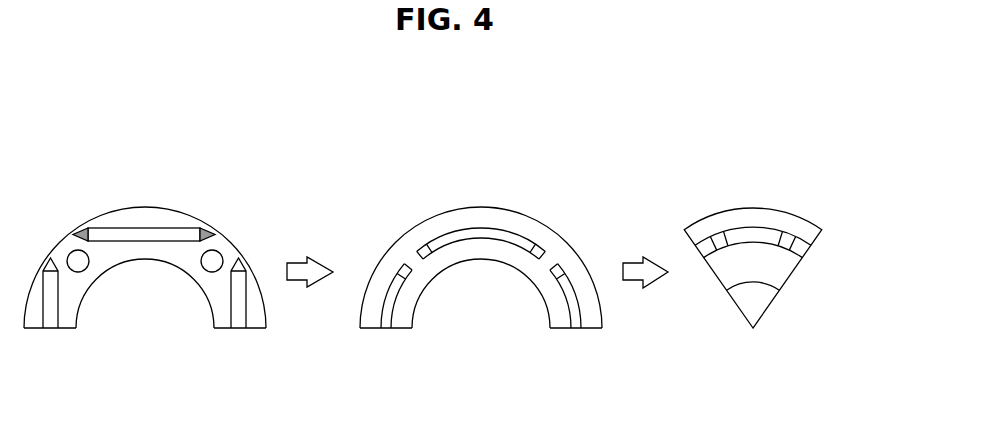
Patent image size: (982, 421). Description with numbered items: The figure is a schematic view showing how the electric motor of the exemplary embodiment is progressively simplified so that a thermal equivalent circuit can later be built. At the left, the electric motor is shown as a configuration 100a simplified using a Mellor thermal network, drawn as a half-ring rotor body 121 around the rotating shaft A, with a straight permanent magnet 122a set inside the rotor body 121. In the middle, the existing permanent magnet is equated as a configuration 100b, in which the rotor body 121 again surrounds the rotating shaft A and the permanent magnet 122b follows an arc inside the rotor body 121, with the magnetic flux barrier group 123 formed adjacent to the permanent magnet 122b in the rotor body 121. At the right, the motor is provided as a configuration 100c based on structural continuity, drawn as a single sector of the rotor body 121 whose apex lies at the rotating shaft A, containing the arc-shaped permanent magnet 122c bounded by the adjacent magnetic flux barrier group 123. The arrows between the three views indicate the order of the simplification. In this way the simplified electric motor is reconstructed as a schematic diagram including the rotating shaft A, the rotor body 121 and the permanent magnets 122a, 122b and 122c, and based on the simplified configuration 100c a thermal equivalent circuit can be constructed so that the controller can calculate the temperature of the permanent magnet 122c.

The configuration 100a is at (145, 215).
The configuration 100b is at (481, 215).
The configuration 100c is at (753, 215).
The rotor body 121 is at (449, 215).
The permanent magnet 122a is at (150, 230).
The permanent magnet 122b is at (492, 233).
The permanent magnet 122c is at (748, 233).
The magnetic flux barrier group 123 is at (540, 247).
The rotating shaft A is at (145, 328).